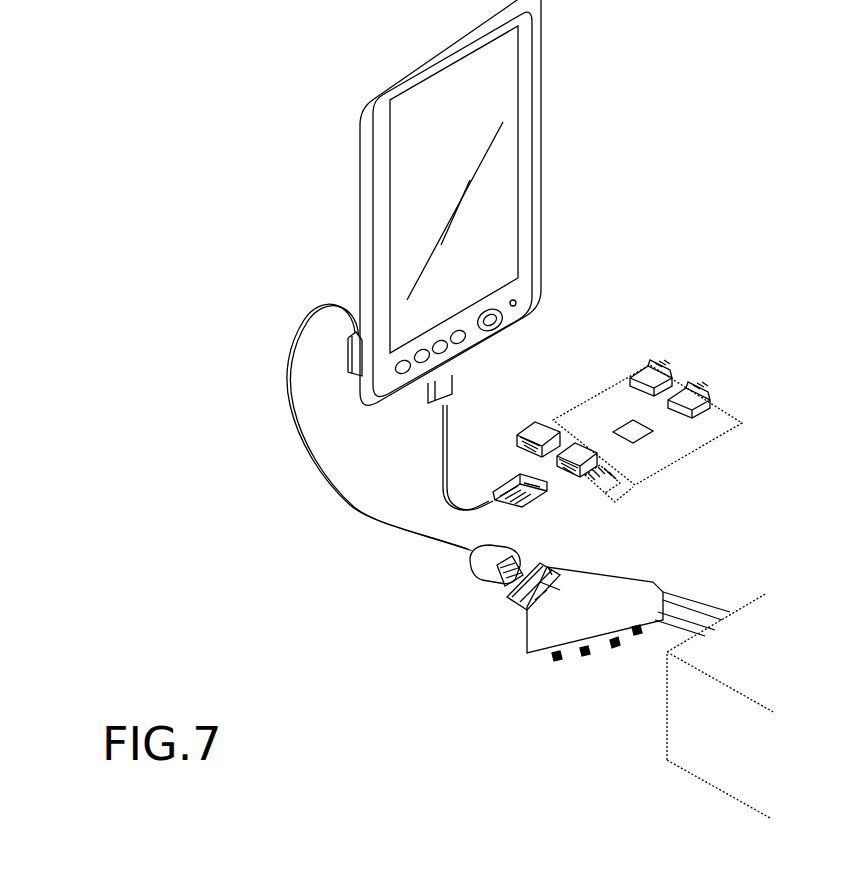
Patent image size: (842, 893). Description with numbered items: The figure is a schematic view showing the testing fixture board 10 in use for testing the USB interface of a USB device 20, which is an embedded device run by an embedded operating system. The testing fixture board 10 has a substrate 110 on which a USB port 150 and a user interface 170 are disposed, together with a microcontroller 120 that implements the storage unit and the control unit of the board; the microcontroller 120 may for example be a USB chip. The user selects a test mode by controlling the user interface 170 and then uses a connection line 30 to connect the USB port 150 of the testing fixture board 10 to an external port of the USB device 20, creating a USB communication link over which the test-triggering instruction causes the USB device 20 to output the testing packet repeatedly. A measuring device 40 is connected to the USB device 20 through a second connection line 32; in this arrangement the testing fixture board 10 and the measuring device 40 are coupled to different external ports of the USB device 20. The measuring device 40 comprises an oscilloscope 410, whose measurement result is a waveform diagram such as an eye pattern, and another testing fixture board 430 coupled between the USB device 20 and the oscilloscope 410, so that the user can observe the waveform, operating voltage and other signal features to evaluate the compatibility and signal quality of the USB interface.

The testing fixture board 10 is at (700, 350).
The USB device 20 is at (362, 147).
The connection line 30 is at (447, 436).
The connection line 32 is at (298, 437).
The measuring device 40 is at (577, 785).
The substrate 110 is at (742, 423).
The microcontroller 120 is at (650, 437).
The USB port 150 is at (580, 441).
The user interface 170 is at (617, 487).
The oscilloscope 410 is at (670, 735).
The testing fixture board 430 is at (527, 636).